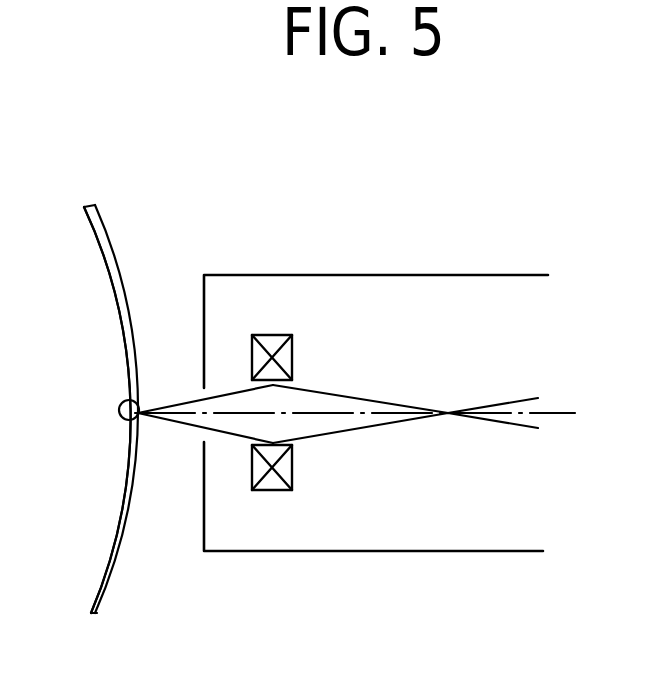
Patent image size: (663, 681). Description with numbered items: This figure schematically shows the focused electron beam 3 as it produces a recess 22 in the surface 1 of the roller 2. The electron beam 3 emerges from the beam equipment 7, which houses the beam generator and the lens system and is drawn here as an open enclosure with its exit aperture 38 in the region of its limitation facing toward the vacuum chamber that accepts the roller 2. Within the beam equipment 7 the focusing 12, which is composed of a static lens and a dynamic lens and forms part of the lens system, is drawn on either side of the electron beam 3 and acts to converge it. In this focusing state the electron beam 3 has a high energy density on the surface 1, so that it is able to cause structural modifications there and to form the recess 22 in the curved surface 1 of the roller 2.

The surface 1 is at (103, 228).
The roller 2 is at (116, 291).
The electron beam 3 is at (372, 398).
The beam equipment 7 is at (413, 275).
The focusing 12 is at (278, 335).
The recess 22 is at (124, 416).
The exit aperture 38 is at (197, 398).